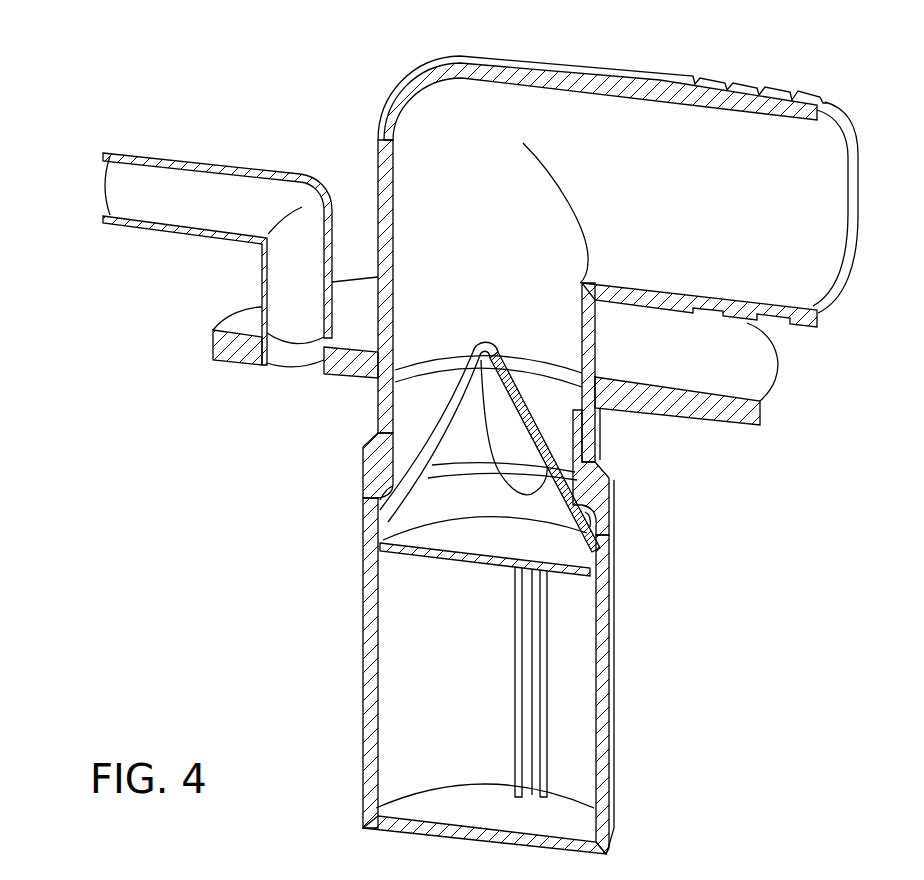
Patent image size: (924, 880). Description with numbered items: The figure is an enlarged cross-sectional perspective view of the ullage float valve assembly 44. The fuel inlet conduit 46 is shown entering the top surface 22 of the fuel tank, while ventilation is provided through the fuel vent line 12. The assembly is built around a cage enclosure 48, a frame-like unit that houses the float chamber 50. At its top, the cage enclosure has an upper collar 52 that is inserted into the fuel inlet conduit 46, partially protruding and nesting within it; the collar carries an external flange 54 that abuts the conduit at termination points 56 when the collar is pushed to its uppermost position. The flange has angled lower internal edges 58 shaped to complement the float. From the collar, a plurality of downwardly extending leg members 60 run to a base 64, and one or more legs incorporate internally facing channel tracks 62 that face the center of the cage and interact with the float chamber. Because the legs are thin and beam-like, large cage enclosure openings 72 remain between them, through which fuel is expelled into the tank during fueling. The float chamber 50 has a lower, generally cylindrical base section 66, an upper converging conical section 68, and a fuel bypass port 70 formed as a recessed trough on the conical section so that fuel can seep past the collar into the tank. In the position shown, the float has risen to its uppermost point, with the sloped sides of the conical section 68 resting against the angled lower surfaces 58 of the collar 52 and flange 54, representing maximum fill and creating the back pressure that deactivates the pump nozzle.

The fuel vent line 12 is at (180, 212).
The top surface 22 is at (772, 372).
The ullage float valve assembly 44 is at (640, 690).
The fuel inlet conduit 46 is at (705, 98).
The cage enclosure 48 is at (598, 756).
The float chamber 50 is at (486, 516).
The upper collar 52 is at (441, 420).
The external flange 54 is at (380, 463).
The termination points 56 is at (377, 433).
The angled lower internal edges 58 is at (387, 488).
The leg members 60 is at (527, 620).
The channel tracks 62 is at (518, 582).
The base 64 is at (460, 815).
The lower cylindrical base section 66 is at (397, 526).
The upper converging conical section 68 is at (507, 352).
The fuel bypass port 70 is at (500, 417).
The cage enclosure openings 72 is at (403, 698).